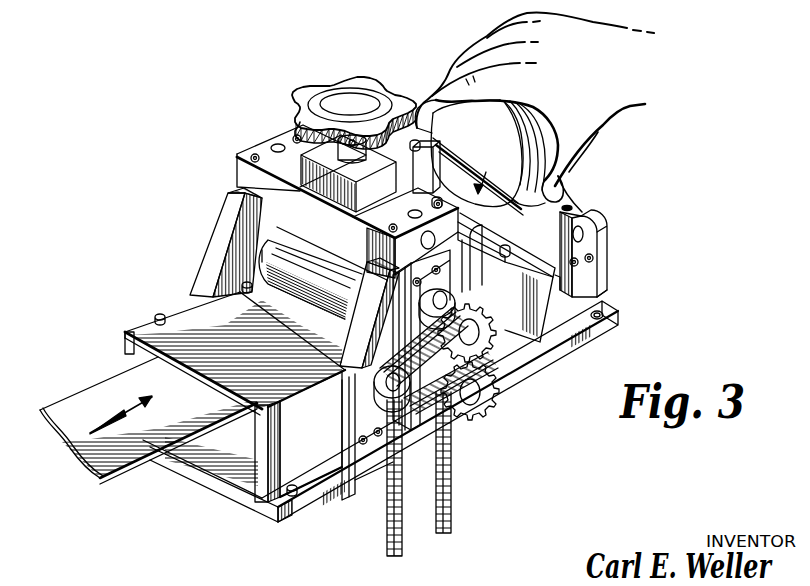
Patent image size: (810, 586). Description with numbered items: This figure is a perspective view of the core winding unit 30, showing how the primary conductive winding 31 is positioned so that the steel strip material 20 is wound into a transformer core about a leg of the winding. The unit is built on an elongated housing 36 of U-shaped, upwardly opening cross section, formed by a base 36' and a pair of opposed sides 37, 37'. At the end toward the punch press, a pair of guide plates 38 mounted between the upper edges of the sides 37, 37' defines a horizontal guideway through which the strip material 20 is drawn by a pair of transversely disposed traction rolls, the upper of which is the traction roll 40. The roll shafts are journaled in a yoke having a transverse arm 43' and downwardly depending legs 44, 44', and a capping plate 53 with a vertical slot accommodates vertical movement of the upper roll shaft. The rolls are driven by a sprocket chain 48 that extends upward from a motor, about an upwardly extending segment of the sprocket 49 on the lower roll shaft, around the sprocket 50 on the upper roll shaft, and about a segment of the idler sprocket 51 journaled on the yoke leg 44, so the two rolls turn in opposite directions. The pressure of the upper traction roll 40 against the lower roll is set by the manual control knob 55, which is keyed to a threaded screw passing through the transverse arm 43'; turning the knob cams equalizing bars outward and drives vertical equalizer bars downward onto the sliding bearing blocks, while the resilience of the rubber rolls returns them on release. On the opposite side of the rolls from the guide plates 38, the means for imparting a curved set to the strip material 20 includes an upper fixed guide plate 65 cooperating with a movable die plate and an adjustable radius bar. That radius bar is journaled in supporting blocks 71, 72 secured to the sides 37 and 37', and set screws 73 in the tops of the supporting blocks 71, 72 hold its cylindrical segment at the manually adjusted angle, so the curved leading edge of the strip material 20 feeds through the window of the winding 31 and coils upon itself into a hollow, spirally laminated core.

The strip material 20 is at (78, 398).
The core winding unit 30 is at (196, 270).
The primary conductive winding 31 is at (494, 132).
The elongated housing 36 is at (440, 417).
The base 36' is at (210, 481).
The side 37 is at (256, 470).
The side 37' is at (104, 348).
The guide plates 38 is at (253, 404).
The traction roll 40 is at (307, 238).
The transverse arm 43' is at (300, 155).
The depending leg 44 is at (350, 298).
The depending leg 44' is at (226, 242).
The sprocket chain 48 is at (452, 491).
The sprocket 49 is at (464, 411).
The sprocket 50 is at (472, 344).
The idler sprocket 51 is at (421, 427).
The capping plate 53 is at (438, 283).
The manual control knob 55 is at (327, 91).
The upper fixed guide plate 65 is at (491, 265).
The supporting block 71 is at (590, 242).
The supporting block 72 is at (420, 160).
The set screws 73 is at (575, 207).